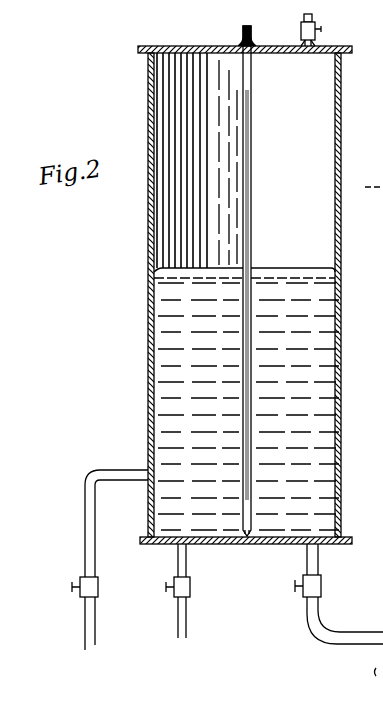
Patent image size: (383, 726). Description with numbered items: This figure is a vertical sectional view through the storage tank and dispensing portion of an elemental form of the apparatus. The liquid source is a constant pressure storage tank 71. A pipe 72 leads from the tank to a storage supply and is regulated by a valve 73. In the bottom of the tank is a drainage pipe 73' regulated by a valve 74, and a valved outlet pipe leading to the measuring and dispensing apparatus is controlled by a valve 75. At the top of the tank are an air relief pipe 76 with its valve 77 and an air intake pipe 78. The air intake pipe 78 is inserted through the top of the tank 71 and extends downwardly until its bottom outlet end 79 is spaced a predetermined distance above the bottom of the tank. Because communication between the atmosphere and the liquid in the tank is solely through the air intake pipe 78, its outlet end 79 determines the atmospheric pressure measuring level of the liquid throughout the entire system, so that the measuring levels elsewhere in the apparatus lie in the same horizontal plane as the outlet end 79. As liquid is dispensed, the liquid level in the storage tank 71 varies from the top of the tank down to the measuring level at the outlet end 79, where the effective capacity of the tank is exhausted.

The constant pressure storage tank 71 is at (146, 102).
The pipe 72 is at (85, 540).
The valve 73 is at (72, 603).
The drainage pipe 73' is at (202, 591).
The valve 74 is at (190, 590).
The valve 75 is at (322, 584).
The air relief pipe 76 is at (312, 18).
The valve 77 is at (322, 32).
The air intake pipe 78 is at (243, 31).
The bottom outlet end 79 is at (253, 544).